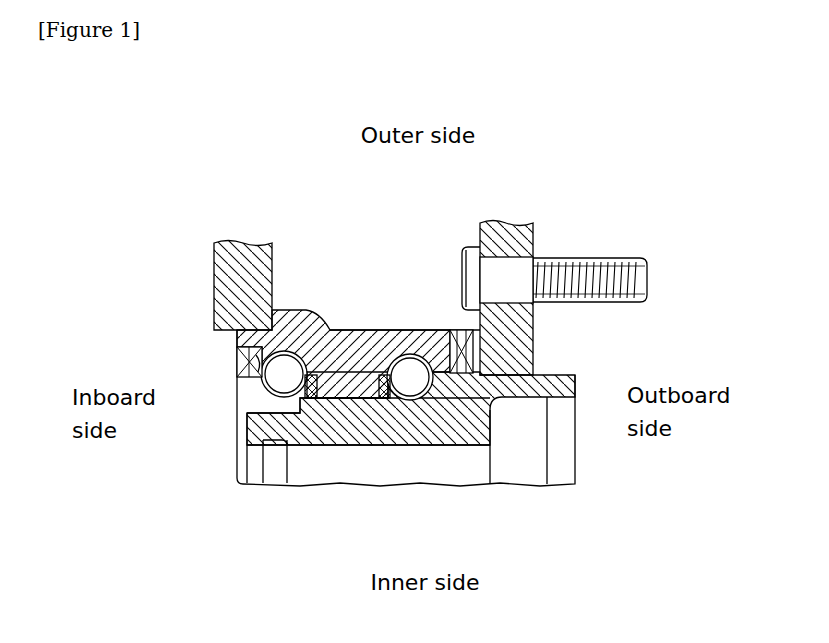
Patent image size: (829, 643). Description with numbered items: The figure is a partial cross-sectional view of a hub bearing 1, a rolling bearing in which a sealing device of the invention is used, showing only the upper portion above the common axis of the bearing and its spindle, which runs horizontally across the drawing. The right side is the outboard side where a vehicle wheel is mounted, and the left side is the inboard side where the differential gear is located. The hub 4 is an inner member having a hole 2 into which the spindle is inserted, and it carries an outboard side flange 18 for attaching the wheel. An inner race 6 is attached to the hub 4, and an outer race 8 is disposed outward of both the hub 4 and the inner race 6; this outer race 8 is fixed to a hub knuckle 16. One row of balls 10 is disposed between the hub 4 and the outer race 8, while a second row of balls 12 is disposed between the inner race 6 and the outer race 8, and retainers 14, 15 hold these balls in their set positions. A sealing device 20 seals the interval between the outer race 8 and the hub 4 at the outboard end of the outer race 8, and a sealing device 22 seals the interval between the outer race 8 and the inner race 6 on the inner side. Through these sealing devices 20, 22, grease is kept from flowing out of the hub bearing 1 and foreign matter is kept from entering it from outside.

The hub bearing 1 is at (592, 526).
The hole 2 is at (405, 445).
The hub 4 is at (369, 428).
The inner race 6 is at (250, 392).
The outer race 8 is at (357, 329).
The balls 10 is at (410, 356).
The balls 12 is at (305, 312).
The retainer 14 is at (368, 357).
The retainer 15 is at (332, 360).
The hub knuckle 16 is at (214, 295).
The outboard side flange 18 is at (533, 336).
The sealing device 20 is at (461, 340).
The sealing device 22 is at (245, 361).